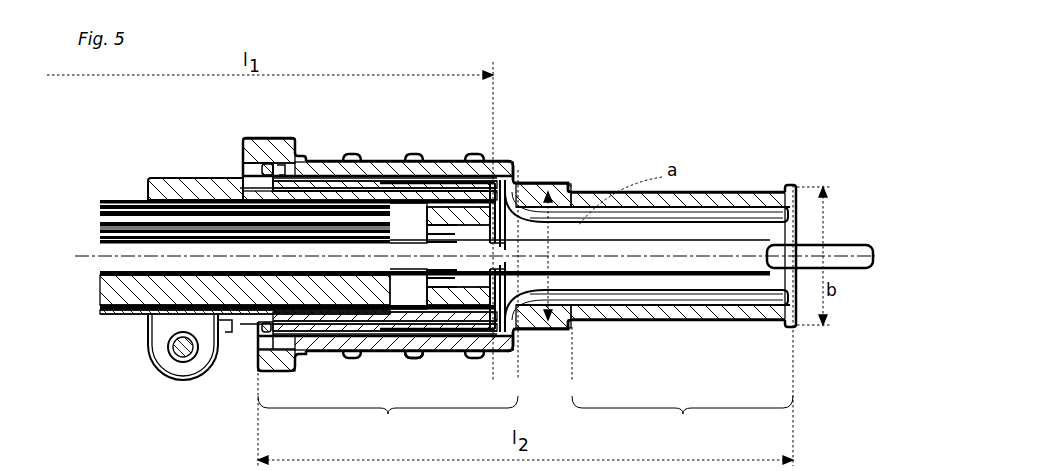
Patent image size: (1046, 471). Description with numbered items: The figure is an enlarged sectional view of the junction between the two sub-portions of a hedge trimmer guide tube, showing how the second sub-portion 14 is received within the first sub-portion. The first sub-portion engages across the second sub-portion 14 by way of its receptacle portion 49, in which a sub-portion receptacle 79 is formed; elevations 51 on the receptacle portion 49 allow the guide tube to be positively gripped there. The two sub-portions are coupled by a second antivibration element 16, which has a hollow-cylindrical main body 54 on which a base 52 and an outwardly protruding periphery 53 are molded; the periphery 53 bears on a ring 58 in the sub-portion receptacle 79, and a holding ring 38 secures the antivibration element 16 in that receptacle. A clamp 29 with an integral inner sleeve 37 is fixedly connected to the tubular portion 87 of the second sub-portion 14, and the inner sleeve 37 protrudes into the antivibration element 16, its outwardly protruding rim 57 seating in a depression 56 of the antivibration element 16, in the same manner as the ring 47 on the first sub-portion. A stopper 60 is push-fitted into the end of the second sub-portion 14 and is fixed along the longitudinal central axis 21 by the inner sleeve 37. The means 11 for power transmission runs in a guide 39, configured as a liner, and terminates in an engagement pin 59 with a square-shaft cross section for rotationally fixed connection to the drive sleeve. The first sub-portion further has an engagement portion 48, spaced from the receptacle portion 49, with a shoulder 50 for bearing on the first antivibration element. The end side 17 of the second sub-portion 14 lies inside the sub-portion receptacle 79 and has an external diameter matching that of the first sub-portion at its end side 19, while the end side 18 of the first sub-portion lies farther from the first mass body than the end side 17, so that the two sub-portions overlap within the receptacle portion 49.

The means for power transmission 11 is at (120, 266).
The second sub-portion 14 is at (130, 198).
The second antivibration element 16 is at (337, 352).
The end side 17 is at (525, 330).
The end side 18 is at (257, 363).
The end side 19 is at (797, 192).
The longitudinal central axis 21 is at (94, 255).
The clamp 29 is at (177, 183).
The inner sleeve 37 is at (378, 190).
The holding ring 38 is at (250, 170).
The guide 39 is at (243, 290).
The ring 47 is at (793, 186).
The engagement portion 48 is at (682, 418).
The receptacle portion 49 is at (388, 419).
The shoulder 50 is at (574, 182).
The elevations 51 is at (476, 153).
The base 52 is at (528, 192).
The periphery 53 is at (270, 163).
The main body 54 is at (351, 154).
The depression 56 is at (487, 328).
The rim 57 is at (493, 322).
The ring 58 is at (300, 157).
The engagement pin 59 is at (851, 250).
The stopper 60 is at (443, 300).
The sub-portion receptacle 79 is at (388, 336).
The tubular portion 87 is at (170, 312).